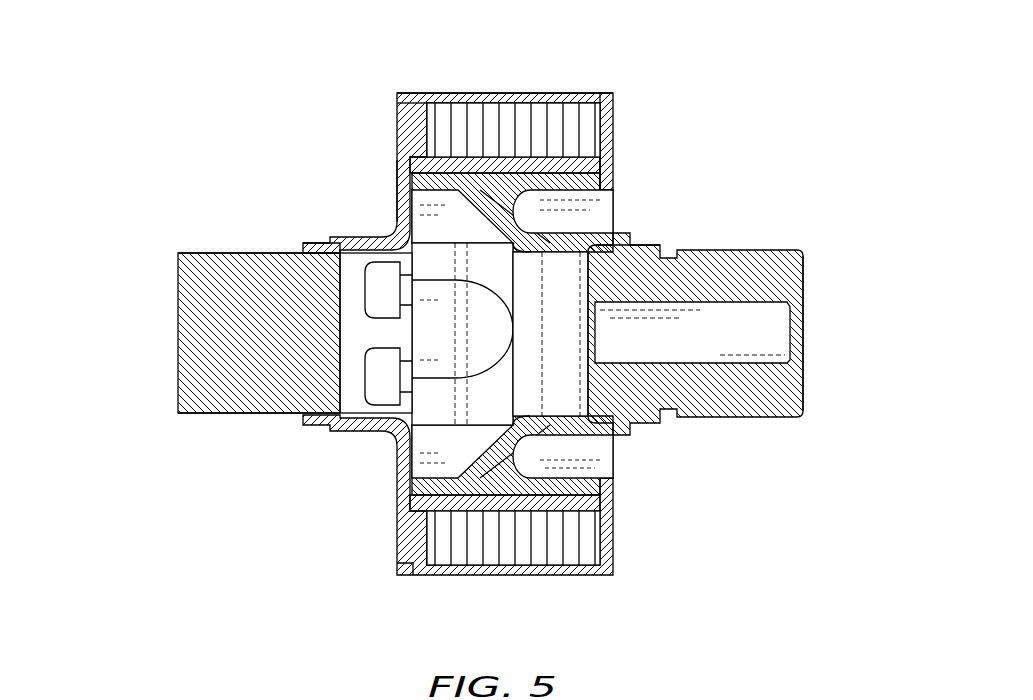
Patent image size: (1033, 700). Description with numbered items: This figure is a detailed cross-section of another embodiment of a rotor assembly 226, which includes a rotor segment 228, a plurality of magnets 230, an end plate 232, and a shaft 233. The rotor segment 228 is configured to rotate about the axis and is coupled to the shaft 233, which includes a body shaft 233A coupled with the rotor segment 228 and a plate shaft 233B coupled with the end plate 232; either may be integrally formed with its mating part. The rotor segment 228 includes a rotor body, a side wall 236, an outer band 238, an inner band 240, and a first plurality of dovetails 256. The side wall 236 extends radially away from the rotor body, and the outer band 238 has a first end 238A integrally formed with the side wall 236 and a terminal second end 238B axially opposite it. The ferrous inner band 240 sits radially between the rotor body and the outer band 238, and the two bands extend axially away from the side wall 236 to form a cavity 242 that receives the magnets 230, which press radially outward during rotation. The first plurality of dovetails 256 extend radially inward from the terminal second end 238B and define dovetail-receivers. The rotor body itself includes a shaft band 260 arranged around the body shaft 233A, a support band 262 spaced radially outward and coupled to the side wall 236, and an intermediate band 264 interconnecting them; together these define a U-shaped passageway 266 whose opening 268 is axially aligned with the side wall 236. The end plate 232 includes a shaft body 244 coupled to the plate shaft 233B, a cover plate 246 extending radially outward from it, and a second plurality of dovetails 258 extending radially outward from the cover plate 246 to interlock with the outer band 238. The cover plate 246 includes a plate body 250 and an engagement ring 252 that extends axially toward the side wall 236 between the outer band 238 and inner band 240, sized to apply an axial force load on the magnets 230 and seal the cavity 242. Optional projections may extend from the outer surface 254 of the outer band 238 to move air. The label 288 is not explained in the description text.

The rotor assembly 226 is at (745, 130).
The rotor segment 228 is at (888, 699).
The plurality of magnets 230 is at (585, 145).
The end plate 232 is at (348, 130).
The shaft 233 is at (128, 200).
The body shaft 233A is at (758, 245).
The plate shaft 233B is at (200, 243).
The side wall 236 is at (613, 103).
The outer band 238 is at (510, 92).
The first end 238A is at (602, 92).
The terminal second end 238B is at (412, 92).
The inner band 240 is at (585, 500).
The cavity 242 is at (570, 120).
The shaft body 244 is at (310, 243).
The cover plate 246 is at (383, 205).
The plate body 250 is at (405, 462).
The engagement ring 252 is at (417, 540).
The outer surface 254 is at (458, 94).
The first plurality of dovetails 256 is at (404, 572).
The second plurality of dovetails 258 is at (398, 92).
The shaft band 260 is at (556, 245).
The support band 262 is at (575, 180).
The intermediate band 264 is at (500, 207).
The U-shaped passageway 266 is at (558, 207).
The opening 268 is at (615, 202).
The motor assembly 288 is at (110, 122).